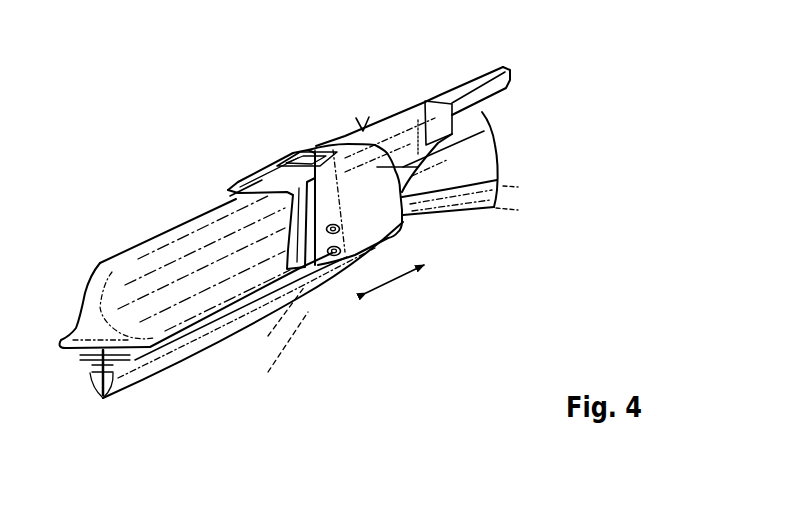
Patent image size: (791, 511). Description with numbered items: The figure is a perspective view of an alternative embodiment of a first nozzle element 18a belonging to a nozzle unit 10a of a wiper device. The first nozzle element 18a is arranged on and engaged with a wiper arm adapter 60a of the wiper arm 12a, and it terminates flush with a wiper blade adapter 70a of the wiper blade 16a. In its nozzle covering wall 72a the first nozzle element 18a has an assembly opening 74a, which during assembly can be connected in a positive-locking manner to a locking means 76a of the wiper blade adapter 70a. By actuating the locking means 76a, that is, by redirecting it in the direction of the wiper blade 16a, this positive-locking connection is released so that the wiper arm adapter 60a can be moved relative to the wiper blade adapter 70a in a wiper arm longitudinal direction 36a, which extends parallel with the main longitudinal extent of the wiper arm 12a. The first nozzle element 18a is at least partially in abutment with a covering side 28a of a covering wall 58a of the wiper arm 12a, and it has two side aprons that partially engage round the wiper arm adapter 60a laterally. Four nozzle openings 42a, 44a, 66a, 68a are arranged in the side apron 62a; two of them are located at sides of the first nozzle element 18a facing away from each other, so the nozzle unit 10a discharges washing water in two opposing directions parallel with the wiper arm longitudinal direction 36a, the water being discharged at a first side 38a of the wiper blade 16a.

The nozzle unit 10a is at (172, 144).
The wiper arm 12a is at (462, 90).
The wiper blade 16a is at (161, 297).
The first nozzle element 18a is at (267, 168).
The covering side 28a is at (365, 124).
The wiper arm longitudinal direction 36a is at (397, 279).
The first side 38a is at (571, 196).
The nozzle opening 42a is at (339, 233).
The nozzle opening 44a is at (337, 255).
The covering wall 58a is at (380, 128).
The wiper arm adapter 60a is at (452, 150).
The side apron 62a is at (462, 125).
The nozzle opening 66a is at (474, 188).
The nozzle opening 68a is at (403, 222).
The wiper blade adapter 70a is at (180, 209).
The nozzle covering wall 72a is at (338, 141).
The assembly opening 74a is at (306, 160).
The locking means 76a is at (272, 162).